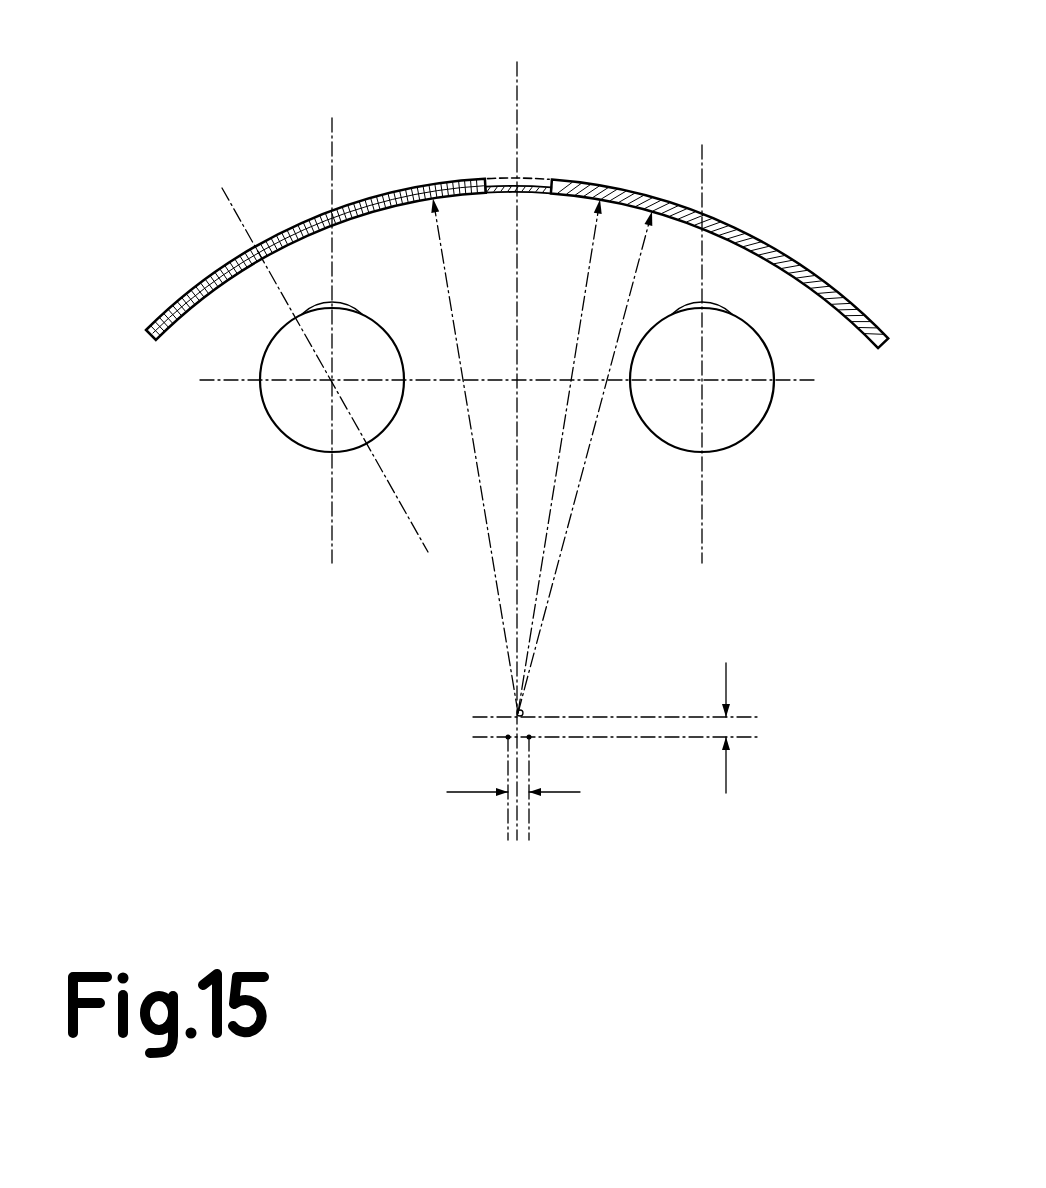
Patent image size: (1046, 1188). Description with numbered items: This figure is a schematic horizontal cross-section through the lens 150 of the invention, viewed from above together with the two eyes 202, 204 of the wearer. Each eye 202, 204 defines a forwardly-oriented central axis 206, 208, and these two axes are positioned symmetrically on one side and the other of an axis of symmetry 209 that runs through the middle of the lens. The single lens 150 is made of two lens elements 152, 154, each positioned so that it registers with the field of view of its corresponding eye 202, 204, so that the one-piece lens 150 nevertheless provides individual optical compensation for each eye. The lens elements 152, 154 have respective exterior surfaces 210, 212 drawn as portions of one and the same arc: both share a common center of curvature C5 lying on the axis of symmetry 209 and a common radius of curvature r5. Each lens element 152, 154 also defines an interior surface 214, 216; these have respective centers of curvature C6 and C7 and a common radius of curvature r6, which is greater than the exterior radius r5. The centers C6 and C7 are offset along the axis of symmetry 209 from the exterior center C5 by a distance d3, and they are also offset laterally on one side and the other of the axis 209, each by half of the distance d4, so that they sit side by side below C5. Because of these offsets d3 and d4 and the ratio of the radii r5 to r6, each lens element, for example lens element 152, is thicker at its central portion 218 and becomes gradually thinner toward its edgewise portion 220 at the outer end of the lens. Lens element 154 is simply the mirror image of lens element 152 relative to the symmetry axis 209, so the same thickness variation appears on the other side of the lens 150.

The lens 150 is at (511, 217).
The lens element 152 is at (222, 260).
The lens element 154 is at (793, 240).
The eye 202 is at (258, 404).
The eye 204 is at (776, 404).
The central axis 206 is at (333, 140).
The central axis 208 is at (702, 173).
The axis of symmetry 209 is at (517, 92).
The exterior surface 210 is at (290, 235).
The exterior surface 212 is at (837, 290).
The interior surface 214 is at (364, 212).
The interior surface 216 is at (749, 252).
The central portion 218 is at (252, 240).
The edgewise portion 220 is at (460, 181).
The radius of curvature r5 is at (561, 445).
The radius of curvature r6 is at (486, 526).
The center of curvature C5 is at (523, 710).
The center of curvature C6 is at (531, 739).
The center of curvature C7 is at (506, 738).
The distance d3 is at (727, 778).
The distance d4 is at (462, 792).